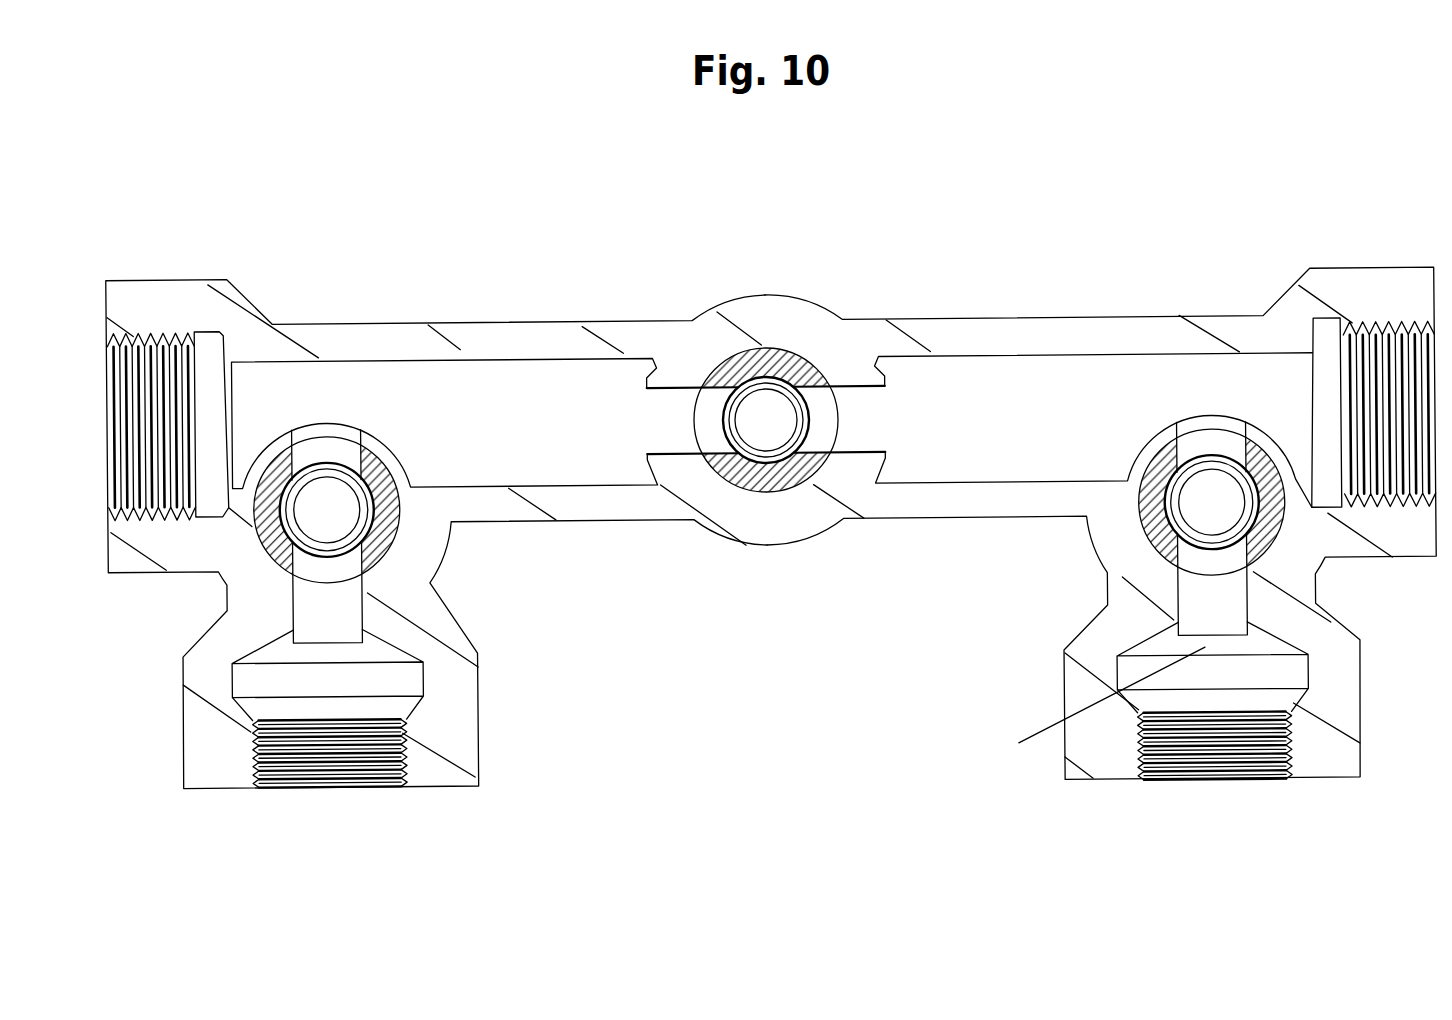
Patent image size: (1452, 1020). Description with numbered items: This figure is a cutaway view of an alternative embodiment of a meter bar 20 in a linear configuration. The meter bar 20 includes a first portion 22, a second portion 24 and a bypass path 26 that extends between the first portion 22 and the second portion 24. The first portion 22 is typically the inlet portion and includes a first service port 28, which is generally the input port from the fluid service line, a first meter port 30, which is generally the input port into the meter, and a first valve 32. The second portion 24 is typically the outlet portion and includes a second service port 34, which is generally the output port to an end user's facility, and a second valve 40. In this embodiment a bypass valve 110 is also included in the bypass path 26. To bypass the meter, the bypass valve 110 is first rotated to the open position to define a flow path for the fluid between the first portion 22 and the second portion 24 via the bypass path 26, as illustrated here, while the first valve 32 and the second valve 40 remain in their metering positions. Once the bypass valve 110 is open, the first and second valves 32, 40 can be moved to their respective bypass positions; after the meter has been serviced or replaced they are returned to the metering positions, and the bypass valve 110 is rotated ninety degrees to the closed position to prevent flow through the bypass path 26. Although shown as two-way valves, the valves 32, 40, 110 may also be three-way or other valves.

The meter bar 20 is at (424, 282).
The first portion 22 is at (307, 319).
The second portion 24 is at (1224, 311).
The bypass path 26 is at (604, 392).
The first service port 28 is at (227, 418).
The first meter port 30 is at (319, 641).
The first valve 32 is at (394, 545).
The second service port 34 is at (1313, 417).
The second valve 40 is at (1139, 535).
The bypass valve 110 is at (762, 497).